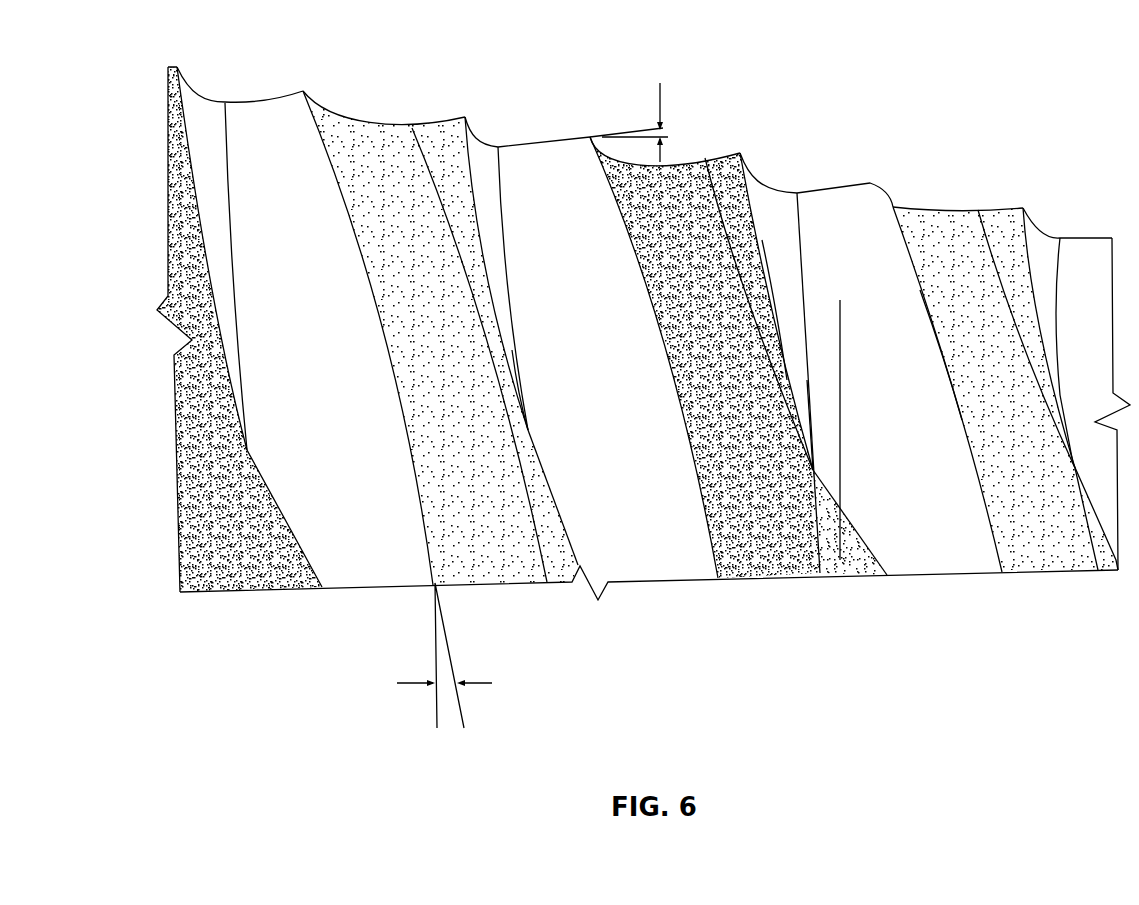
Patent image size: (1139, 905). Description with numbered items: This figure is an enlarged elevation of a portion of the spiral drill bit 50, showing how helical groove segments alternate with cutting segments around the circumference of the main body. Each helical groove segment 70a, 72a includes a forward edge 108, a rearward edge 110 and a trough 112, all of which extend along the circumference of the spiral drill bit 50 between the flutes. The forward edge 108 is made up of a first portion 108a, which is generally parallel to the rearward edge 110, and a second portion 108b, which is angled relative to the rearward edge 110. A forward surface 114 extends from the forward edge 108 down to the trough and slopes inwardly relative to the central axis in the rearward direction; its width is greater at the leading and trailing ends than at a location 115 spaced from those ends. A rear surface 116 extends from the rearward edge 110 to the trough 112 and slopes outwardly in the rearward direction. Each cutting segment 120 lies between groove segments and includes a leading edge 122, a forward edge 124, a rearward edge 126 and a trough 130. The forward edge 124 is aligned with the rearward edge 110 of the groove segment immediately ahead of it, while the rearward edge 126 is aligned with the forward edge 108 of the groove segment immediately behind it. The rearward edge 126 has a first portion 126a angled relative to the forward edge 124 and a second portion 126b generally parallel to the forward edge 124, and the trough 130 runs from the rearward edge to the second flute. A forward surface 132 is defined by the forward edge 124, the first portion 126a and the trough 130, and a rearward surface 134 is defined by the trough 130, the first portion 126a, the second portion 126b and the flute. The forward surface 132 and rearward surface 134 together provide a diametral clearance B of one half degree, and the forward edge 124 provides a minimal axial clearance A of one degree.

The spiral drill bit 50 is at (585, 648).
The helical groove segment 70a is at (442, 135).
The helical groove segment 72a is at (730, 153).
The forward edge 108 is at (473, 183).
The first portion 108a is at (477, 227).
The second portion 108b is at (567, 540).
The rearward edge 110 is at (378, 298).
The trough 112 is at (1017, 323).
The forward surface 114 is at (1020, 252).
The location 115 is at (528, 430).
The rear surface 116 is at (662, 310).
The cutting segment 120 is at (547, 153).
The leading edge 122 is at (983, 567).
The forward edge 124 is at (948, 366).
The rearward edge 126 is at (472, 142).
The first portion 126a is at (867, 527).
The second portion 126b is at (778, 285).
The trough 130 is at (798, 317).
The forward surface 132 is at (917, 480).
The rearward surface 134 is at (780, 207).
The axial clearance A is at (420, 684).
The diametral clearance B is at (658, 108).